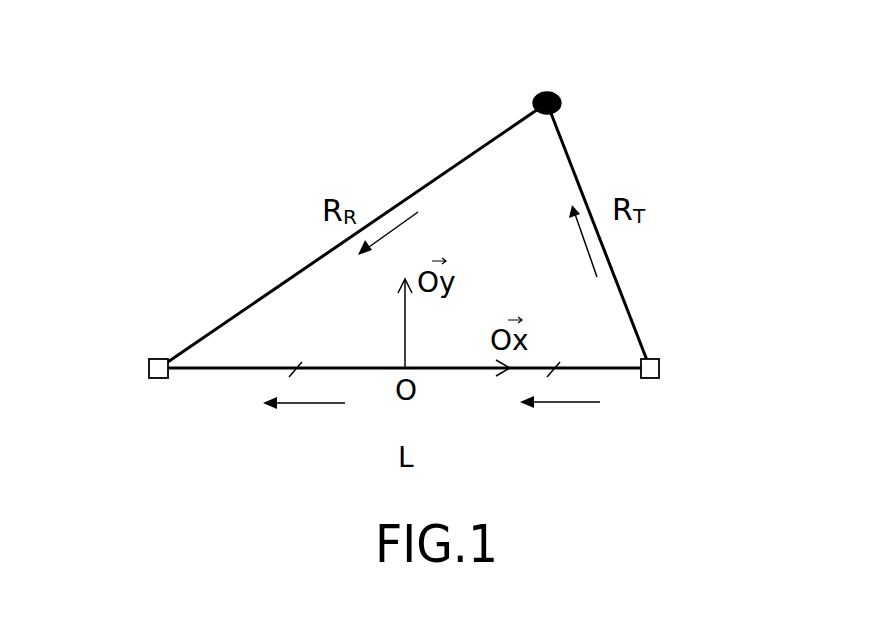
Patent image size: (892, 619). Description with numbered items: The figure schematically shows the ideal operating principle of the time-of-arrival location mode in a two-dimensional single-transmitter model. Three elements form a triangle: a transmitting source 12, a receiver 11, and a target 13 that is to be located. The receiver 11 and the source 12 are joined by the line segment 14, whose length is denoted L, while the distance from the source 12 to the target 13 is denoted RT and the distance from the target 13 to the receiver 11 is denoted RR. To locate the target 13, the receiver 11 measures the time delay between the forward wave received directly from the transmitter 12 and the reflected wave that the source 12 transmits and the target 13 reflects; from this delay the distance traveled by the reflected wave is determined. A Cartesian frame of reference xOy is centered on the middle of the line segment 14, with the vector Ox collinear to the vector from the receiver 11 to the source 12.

The receiver 11 is at (149, 362).
The transmitting source 12 is at (659, 368).
The target 13 is at (535, 96).
The line segment [Rx, Tx] 14 is at (235, 369).